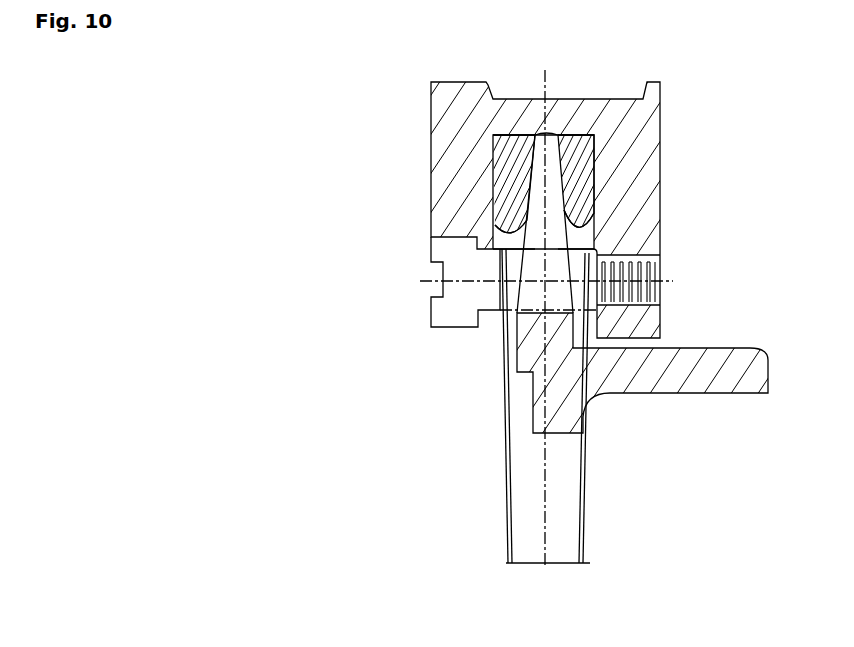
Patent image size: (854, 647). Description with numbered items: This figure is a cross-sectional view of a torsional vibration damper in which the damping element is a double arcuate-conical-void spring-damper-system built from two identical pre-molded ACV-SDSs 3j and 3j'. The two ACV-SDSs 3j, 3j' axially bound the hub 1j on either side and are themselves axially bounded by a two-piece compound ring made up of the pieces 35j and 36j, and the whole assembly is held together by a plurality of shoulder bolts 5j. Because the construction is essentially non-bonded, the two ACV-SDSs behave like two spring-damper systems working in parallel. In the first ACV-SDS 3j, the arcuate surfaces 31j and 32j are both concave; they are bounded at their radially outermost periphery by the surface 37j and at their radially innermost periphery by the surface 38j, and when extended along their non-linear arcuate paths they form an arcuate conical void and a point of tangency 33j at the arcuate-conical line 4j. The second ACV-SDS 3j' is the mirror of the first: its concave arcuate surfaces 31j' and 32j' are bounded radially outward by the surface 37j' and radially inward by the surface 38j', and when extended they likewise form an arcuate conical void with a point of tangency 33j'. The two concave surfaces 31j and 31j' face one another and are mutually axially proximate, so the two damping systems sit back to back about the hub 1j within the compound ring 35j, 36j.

The hub 1j is at (727, 378).
The ACV-SDS 3j is at (446, 214).
The ACV-SDS 3j' is at (655, 230).
The ACL 4j is at (558, 565).
The shoulder bolt 5j is at (442, 310).
The arcuate surface 31j is at (433, 224).
The arcuate surface 31j' is at (655, 224).
The arcuate surface 32j is at (446, 174).
The arcuate surface 32j' is at (634, 166).
The POT 33j is at (487, 406).
The POT 33j' is at (612, 408).
The compound ring piece 35j is at (448, 108).
The compound ring piece 36j is at (647, 122).
The surface 37j is at (525, 77).
The surface 37j' is at (593, 77).
The surface 38j is at (480, 323).
The surface 38j' is at (642, 267).